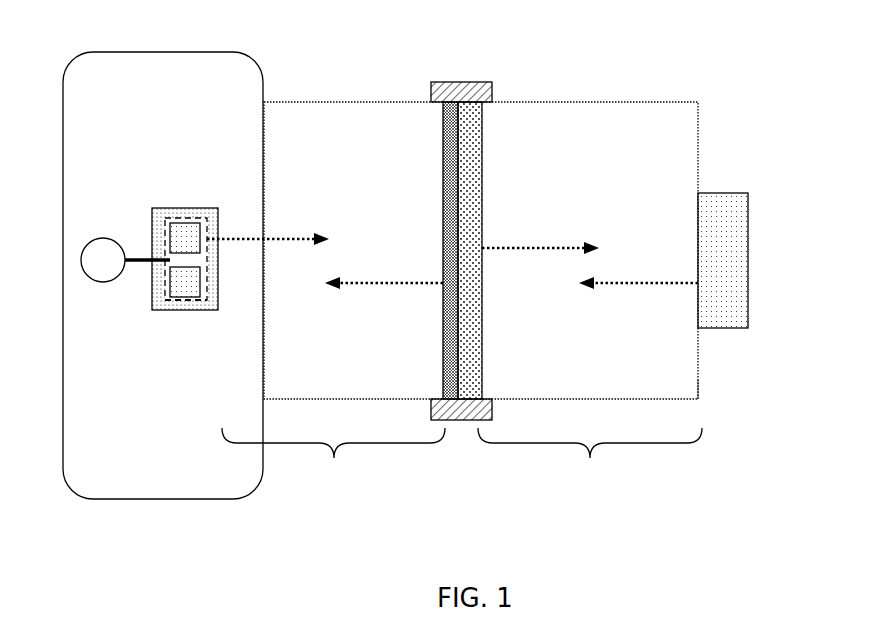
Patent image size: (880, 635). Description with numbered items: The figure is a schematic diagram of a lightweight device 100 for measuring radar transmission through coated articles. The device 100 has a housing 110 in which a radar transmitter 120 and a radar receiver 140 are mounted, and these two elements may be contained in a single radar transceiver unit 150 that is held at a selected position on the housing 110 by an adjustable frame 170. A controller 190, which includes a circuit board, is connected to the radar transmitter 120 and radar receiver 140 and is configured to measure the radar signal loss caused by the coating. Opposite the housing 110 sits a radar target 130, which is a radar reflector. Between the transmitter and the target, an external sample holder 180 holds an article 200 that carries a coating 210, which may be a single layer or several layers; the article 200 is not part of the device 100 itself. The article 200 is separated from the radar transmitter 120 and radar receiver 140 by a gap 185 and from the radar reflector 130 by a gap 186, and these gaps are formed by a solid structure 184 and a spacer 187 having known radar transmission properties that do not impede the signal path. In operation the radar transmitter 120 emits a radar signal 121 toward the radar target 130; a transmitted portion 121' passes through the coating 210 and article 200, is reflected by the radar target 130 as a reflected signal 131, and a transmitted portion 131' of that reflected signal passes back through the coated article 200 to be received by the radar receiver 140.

The device 100 is at (90, 565).
The housing 110 is at (222, 500).
The radar transmitter 120 is at (183, 218).
The radar signal 121 is at (268, 215).
The transmitted portion of the radar signal 121' is at (540, 225).
The radar target 130 is at (723, 193).
The reflected signal 131 is at (638, 309).
The transmitted portion of the reflected radar signal 131' is at (384, 309).
The radar receiver 140 is at (195, 300).
The radar transceiver unit 150 is at (168, 310).
The adjustable frame 170 is at (167, 215).
The sample holder 180 is at (492, 95).
The solid structure 184 is at (300, 101).
The gap 185 is at (333, 459).
The gap 186 is at (590, 459).
The spacer 187 is at (698, 387).
The controller 190 is at (104, 238).
The article 200 is at (468, 118).
The coating 210 is at (443, 110).